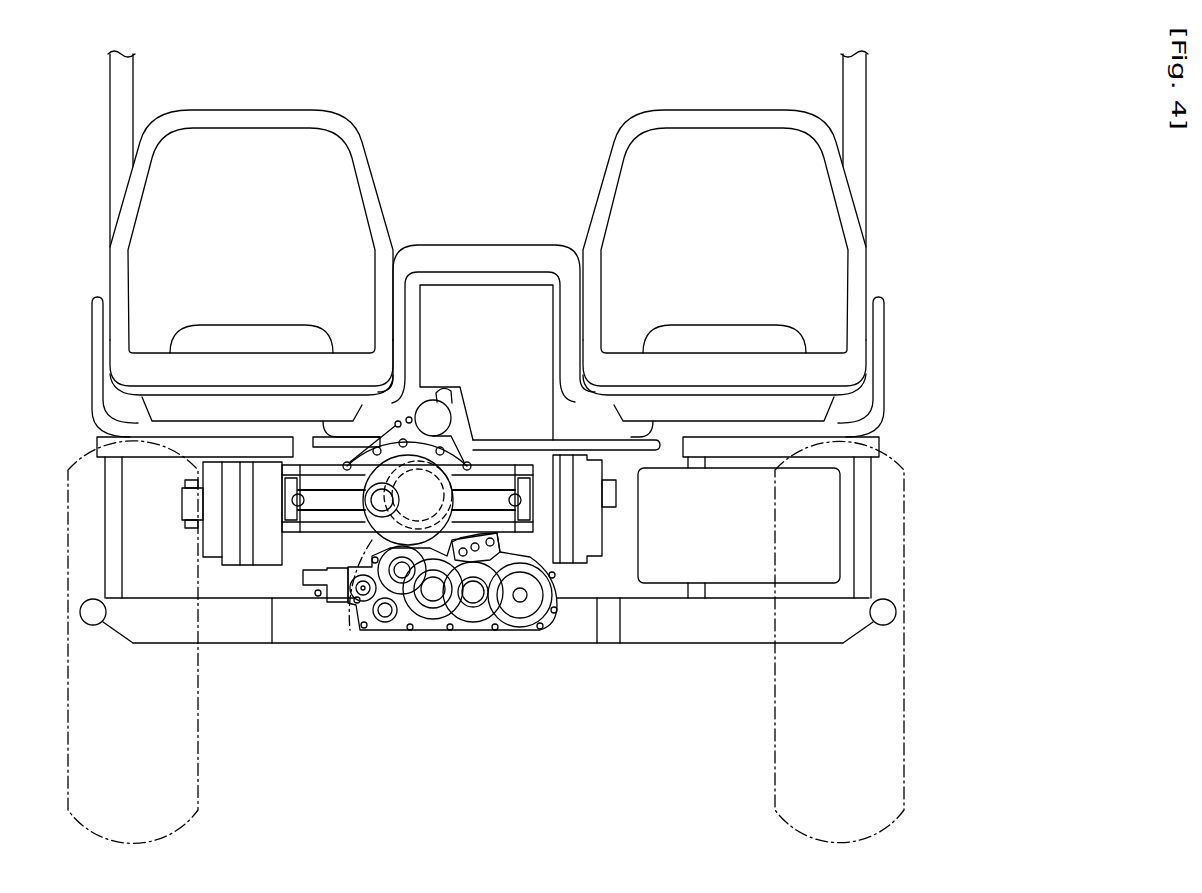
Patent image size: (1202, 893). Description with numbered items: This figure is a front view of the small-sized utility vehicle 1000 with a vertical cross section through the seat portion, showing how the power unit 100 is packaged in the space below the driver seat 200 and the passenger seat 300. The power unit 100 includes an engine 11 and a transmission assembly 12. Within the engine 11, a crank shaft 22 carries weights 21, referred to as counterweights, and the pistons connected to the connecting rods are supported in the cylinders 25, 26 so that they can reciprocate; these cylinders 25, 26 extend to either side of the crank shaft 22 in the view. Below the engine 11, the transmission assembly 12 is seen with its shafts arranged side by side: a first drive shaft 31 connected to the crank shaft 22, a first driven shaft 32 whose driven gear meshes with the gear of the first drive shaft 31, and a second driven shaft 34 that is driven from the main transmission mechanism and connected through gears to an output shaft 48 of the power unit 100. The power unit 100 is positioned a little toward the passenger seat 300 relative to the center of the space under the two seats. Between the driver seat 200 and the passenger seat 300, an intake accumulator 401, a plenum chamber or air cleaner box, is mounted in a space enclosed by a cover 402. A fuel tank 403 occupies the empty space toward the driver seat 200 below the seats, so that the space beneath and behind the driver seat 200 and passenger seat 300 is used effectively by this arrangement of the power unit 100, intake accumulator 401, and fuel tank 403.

The small-sized utility vehicle 1000 is at (466, 101).
The passenger seat 300 is at (240, 143).
The driver seat 200 is at (705, 143).
The cover 402 is at (470, 249).
The intake accumulator 401 is at (505, 284).
The weights 21 is at (475, 442).
The engine 11 is at (337, 557).
The transmission assembly 12 is at (434, 637).
The crank shaft 22 is at (355, 592).
The cylinder 25 is at (300, 540).
The cylinder 26 is at (570, 565).
The first drive shaft 31 is at (403, 628).
The first driven shaft 32 is at (434, 600).
The second driven shaft 34 is at (473, 600).
The output shaft 48 is at (533, 630).
The power unit 100 is at (495, 632).
The fuel tank 403 is at (748, 575).